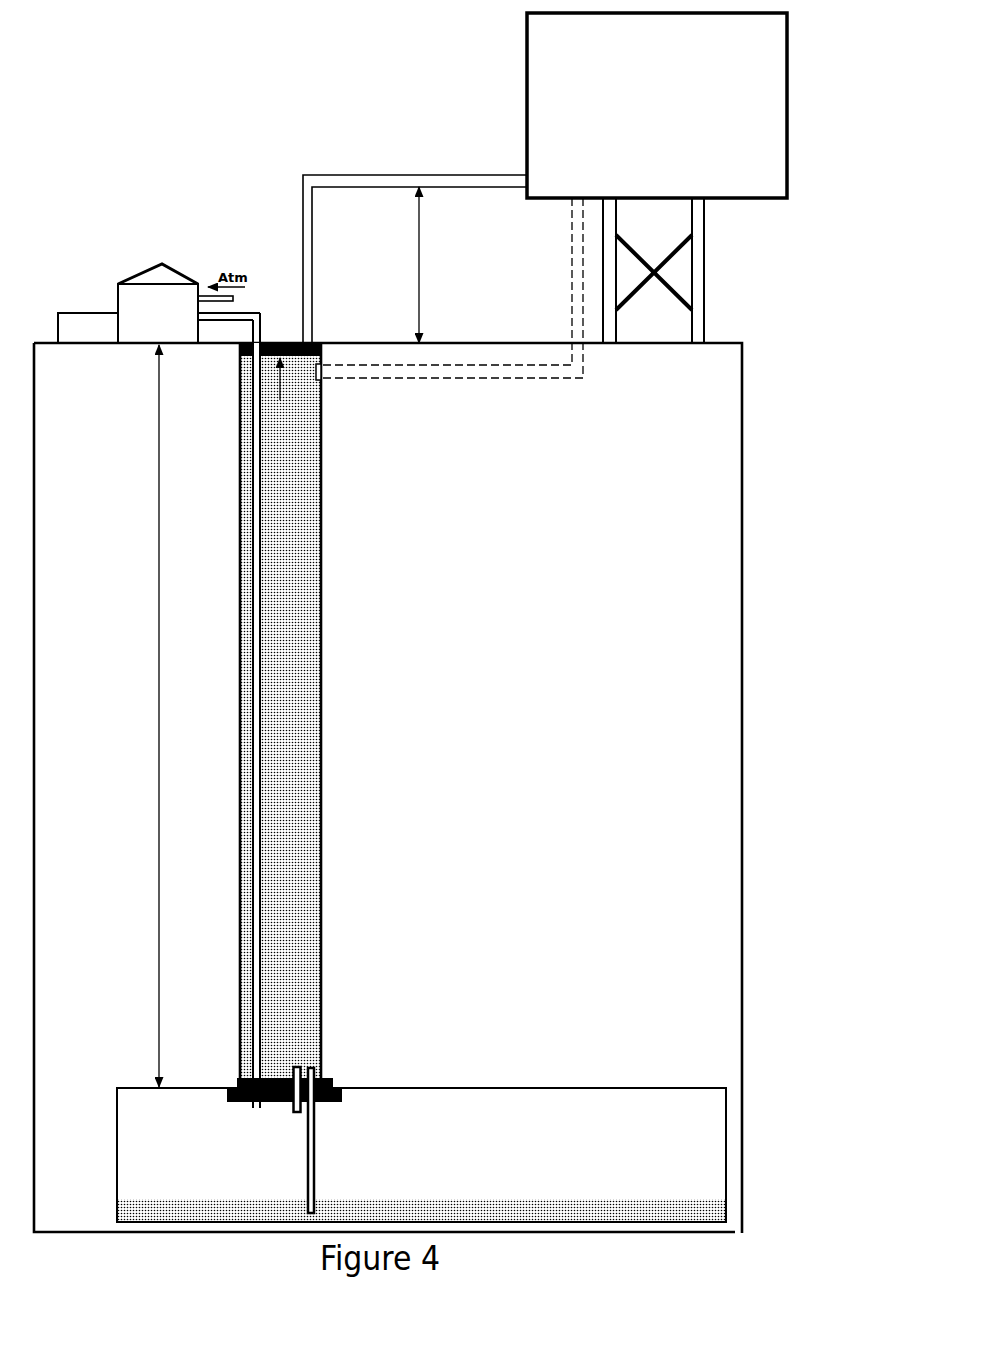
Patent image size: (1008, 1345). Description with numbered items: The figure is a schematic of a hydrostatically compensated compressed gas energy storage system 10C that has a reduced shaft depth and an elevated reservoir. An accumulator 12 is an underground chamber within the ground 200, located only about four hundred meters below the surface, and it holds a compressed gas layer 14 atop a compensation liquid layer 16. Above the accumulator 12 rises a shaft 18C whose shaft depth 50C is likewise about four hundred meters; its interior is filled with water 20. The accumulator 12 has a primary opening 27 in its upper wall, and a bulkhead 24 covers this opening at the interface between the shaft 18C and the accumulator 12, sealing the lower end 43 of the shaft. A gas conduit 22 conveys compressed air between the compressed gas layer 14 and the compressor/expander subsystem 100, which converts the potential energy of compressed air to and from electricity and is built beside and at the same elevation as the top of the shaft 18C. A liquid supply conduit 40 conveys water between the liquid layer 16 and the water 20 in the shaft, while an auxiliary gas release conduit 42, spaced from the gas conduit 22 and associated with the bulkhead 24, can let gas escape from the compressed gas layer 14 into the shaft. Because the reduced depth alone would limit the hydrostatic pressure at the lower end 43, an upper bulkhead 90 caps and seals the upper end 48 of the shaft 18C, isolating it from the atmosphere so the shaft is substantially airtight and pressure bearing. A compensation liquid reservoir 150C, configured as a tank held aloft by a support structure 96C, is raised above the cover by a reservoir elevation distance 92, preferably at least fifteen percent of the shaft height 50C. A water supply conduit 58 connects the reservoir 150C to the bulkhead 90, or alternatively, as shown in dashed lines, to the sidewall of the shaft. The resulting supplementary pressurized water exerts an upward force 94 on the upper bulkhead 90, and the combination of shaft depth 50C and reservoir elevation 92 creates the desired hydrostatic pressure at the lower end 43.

The hydrostatically compensated compressed gas energy storage system 10C is at (125, 282).
The compressor/expander subsystem 100 is at (189, 273).
The gas conduit 22 is at (261, 338).
The upper bulkhead 90 is at (296, 336).
The reservoir elevation distance 92 is at (419, 282).
The water supply conduit 58 is at (403, 175).
The compensation liquid reservoir 150C is at (527, 107).
The support structure 96C is at (708, 285).
The upper end of the shaft 48 is at (303, 362).
The upward force 94 is at (284, 407).
The shaft depth 50C is at (159, 585).
The shaft 18C is at (240, 662).
The water 20 is at (248, 715).
The ground 200 is at (527, 763).
The auxiliary gas release conduit 42 is at (302, 1060).
The lower end of the shaft 43 is at (337, 1085).
The bulkhead 24 is at (238, 1080).
The accumulator 12 is at (117, 1088).
The compressed gas layer 14 is at (125, 1133).
The compensation liquid layer 16 is at (125, 1208).
The primary opening 27 is at (332, 1117).
The liquid supply conduit 40 is at (315, 1153).